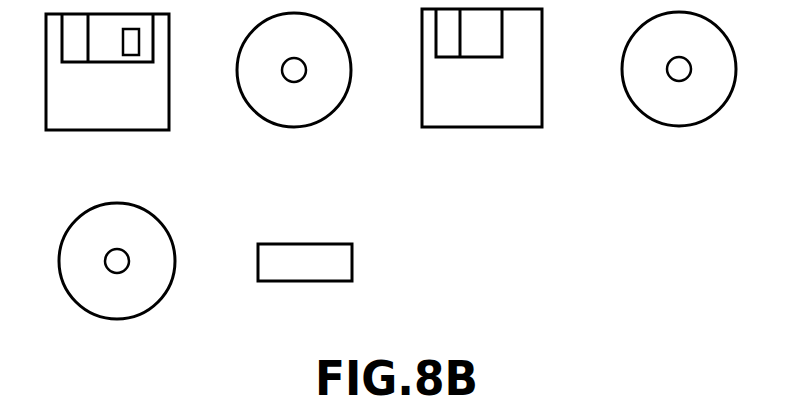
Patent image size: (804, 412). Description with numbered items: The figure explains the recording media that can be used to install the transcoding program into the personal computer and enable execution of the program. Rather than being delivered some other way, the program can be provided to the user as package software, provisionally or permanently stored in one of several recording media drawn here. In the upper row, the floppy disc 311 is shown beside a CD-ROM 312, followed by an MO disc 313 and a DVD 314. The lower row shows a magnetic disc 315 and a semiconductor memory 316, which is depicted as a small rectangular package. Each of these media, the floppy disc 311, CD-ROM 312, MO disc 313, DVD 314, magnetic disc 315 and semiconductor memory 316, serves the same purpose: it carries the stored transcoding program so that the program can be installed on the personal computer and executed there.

The floppy disc 311 is at (118, 130).
The CD-ROM 312 is at (305, 127).
The MO disc 313 is at (488, 127).
The DVD 314 is at (682, 126).
The magnetic disc 315 is at (123, 319).
The semiconductor memory 316 is at (310, 281).